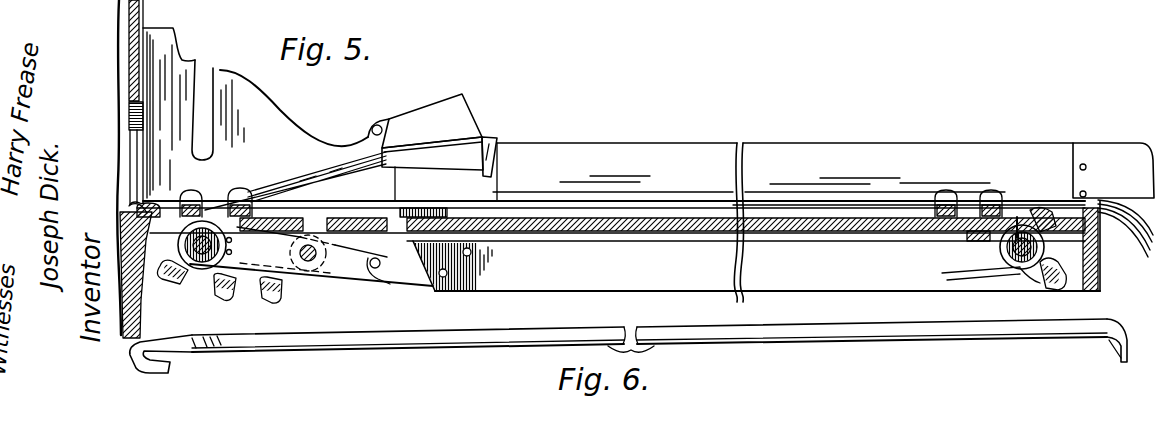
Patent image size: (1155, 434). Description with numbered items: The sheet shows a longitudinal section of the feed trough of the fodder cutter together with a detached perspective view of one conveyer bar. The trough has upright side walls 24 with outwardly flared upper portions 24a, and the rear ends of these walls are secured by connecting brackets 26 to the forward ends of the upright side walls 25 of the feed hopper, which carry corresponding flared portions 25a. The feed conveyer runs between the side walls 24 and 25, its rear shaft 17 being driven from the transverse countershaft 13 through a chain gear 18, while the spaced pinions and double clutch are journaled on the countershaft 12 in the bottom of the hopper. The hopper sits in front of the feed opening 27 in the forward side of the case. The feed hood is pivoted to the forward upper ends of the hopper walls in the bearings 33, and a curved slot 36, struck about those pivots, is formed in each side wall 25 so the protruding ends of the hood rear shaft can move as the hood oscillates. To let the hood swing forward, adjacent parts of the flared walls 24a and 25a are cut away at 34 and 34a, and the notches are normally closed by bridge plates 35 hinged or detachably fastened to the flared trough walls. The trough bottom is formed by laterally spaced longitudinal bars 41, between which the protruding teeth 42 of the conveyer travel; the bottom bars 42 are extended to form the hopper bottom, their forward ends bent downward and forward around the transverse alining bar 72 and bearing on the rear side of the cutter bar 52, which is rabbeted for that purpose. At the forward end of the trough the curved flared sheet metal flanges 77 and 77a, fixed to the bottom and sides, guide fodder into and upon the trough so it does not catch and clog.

In FIG. 5, the countershaft 12 is at (637, 226).
In FIG. 5, the countershaft 13 is at (320, 254).
In FIG. 5, the rear shaft 17 is at (200, 272).
In FIG. 5, the chain gear 18 is at (298, 282).
In FIG. 5, the side walls 24 is at (600, 286).
In FIG. 5, the flared upper portions 24a is at (758, 147).
In FIG. 5, the side walls 25 is at (322, 150).
In FIG. 5, the flared portions 25a is at (381, 184).
In FIG. 5, the connecting brackets 26 is at (407, 277).
In FIG. 5, the feed opening 27 is at (140, 183).
In FIG. 5, the bearings 33 is at (383, 120).
In FIG. 5, the notches 34 is at (401, 173).
In FIG. 5, the notches 34a is at (458, 172).
In FIG. 5, the bridge plates 35 is at (505, 145).
In FIG. 5, the slot 36 is at (222, 74).
In FIG. 5, the longitudinal bars 41 is at (945, 210).
In FIG. 6, the longitudinal bars 41 is at (473, 337).
In FIG. 5, the bottom bars 42 is at (210, 202).
In FIG. 5, the cutter bar 52 is at (144, 221).
In FIG. 5, the alining bar 72 is at (142, 212).
In FIG. 5, the flared flange 77 is at (1137, 218).
In FIG. 5, the flared flange 77a is at (1110, 155).